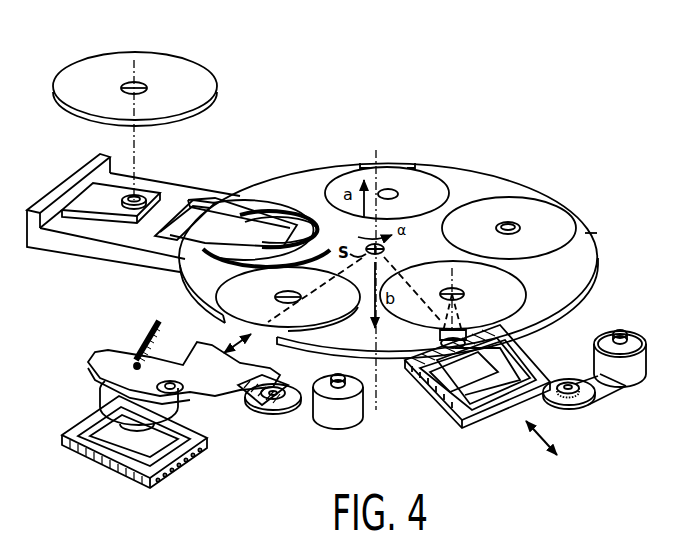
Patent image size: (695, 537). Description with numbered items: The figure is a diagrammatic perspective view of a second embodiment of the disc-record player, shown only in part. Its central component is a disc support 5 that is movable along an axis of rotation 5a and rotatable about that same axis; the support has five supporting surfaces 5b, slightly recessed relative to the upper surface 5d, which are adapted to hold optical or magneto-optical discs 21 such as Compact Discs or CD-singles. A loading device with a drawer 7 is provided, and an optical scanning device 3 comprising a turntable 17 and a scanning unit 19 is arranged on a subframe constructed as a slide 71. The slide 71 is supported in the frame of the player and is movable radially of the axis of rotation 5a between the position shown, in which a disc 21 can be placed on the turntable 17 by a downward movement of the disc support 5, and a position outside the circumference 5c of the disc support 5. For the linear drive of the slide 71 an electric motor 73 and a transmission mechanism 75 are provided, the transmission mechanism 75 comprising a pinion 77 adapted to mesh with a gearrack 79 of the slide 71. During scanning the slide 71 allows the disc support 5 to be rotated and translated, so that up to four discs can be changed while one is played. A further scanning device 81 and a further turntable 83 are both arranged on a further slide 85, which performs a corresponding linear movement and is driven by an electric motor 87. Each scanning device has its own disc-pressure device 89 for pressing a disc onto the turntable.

The scanning device 3 is at (500, 352).
The disc support 5 is at (580, 302).
The axis of rotation 5a is at (382, 163).
The supporting surfaces 5b is at (262, 205).
The circumference 5c is at (520, 181).
The upper surface 5d is at (467, 185).
The drawer 7 is at (75, 252).
The turntable 17 is at (468, 305).
The scanning unit 19 is at (437, 390).
The optical disc 21 is at (115, 66).
The slide 71 is at (497, 407).
The electric motor 73 is at (643, 360).
The transmission mechanism 75 is at (568, 403).
The pinion 77 is at (614, 407).
The gearrack 79 is at (555, 385).
The further scanning device 81 is at (123, 437).
The further turntable 83 is at (200, 412).
The further slide 85 is at (73, 427).
The electric motor 87 is at (350, 413).
The disc-pressure device 89 is at (125, 360).